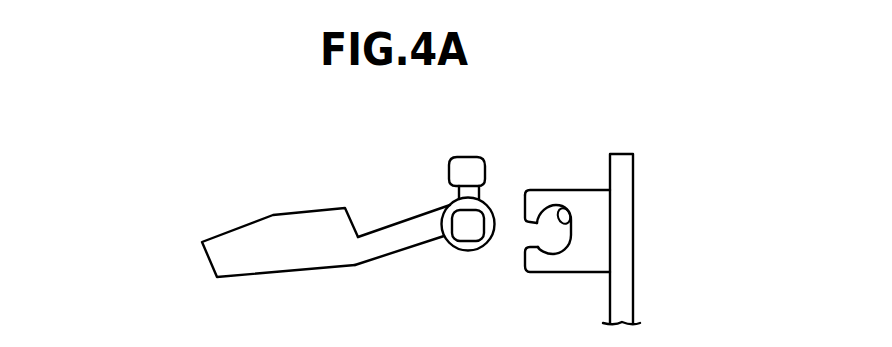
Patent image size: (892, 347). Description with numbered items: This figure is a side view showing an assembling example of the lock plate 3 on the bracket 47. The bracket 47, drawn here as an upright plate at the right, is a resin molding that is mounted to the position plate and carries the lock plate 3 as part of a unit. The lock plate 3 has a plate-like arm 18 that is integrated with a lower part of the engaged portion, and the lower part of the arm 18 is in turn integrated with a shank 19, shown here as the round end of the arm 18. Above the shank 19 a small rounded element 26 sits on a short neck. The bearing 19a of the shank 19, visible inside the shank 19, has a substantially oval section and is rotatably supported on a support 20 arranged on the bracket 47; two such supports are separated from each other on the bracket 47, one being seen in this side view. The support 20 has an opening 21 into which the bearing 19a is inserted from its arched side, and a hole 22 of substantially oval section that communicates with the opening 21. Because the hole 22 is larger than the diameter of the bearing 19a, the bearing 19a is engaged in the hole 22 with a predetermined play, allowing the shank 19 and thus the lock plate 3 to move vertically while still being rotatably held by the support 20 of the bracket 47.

The lock plate 3 is at (290, 274).
The arm 18 is at (400, 245).
The shank 19 is at (458, 250).
The bearing 19a is at (473, 230).
The knob 26 is at (465, 172).
The support 20 is at (570, 190).
The opening 21 is at (535, 228).
The hole 22 is at (566, 222).
The bracket 47 is at (620, 293).